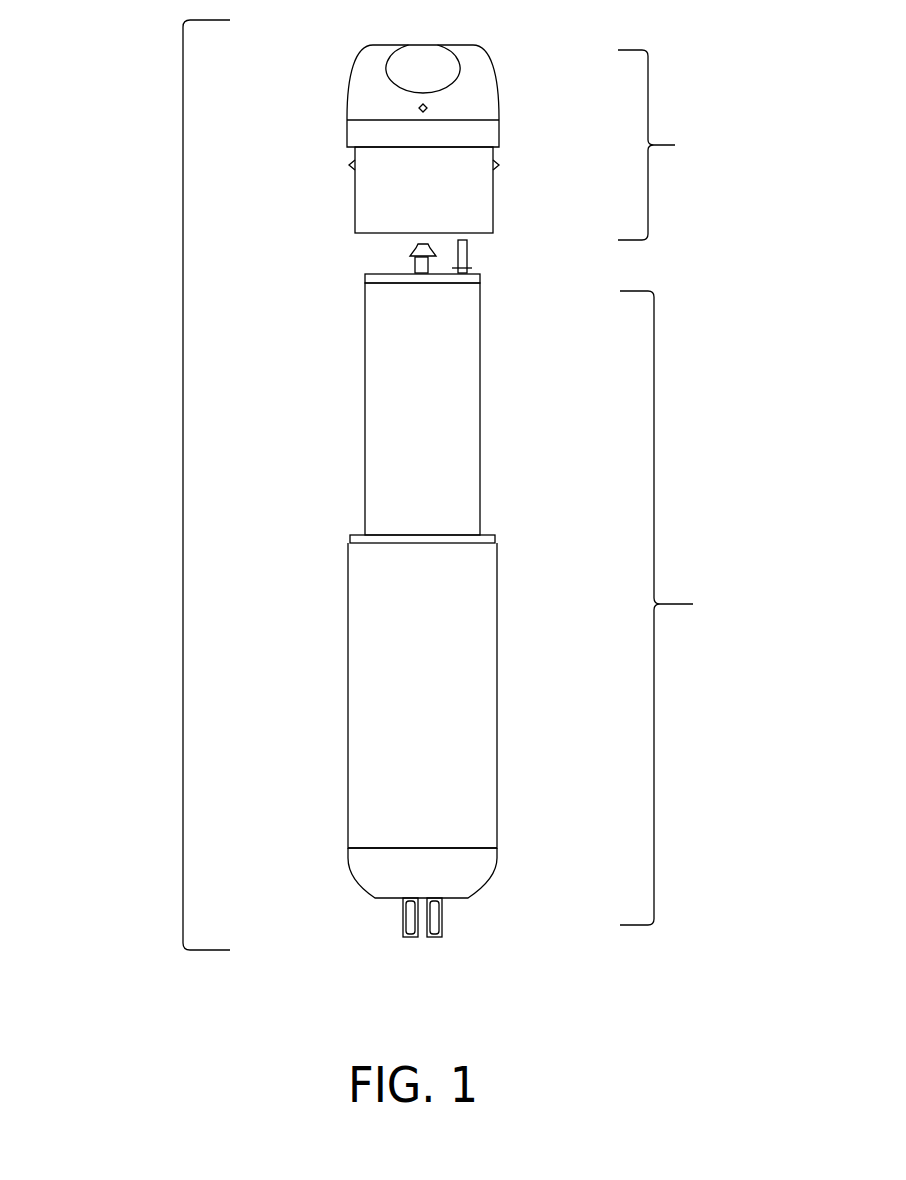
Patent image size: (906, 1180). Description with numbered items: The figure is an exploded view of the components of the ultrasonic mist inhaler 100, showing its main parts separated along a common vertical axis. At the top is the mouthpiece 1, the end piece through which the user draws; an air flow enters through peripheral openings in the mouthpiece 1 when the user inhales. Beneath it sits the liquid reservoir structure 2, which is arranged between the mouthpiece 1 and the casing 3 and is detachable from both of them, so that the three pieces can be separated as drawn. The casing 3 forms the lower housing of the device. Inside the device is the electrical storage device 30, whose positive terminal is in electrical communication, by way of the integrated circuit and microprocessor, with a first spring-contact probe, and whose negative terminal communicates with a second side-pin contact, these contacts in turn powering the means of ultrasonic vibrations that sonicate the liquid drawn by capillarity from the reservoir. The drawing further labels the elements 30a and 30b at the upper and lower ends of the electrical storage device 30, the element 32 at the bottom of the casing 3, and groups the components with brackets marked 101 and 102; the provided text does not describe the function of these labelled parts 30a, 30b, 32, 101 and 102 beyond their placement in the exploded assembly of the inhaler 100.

The ultrasonic mist inhaler 100 is at (183, 125).
The lower part 101 is at (690, 608).
The upper part 102 is at (680, 145).
The mouthpiece 1 is at (340, 88).
The liquid reservoir structure 2 is at (330, 155).
The upper plate 30a is at (352, 278).
The electrical storage device 30 is at (338, 440).
The lower plate 30b is at (355, 510).
The casing 3 is at (336, 738).
The connection pins 32 is at (403, 917).